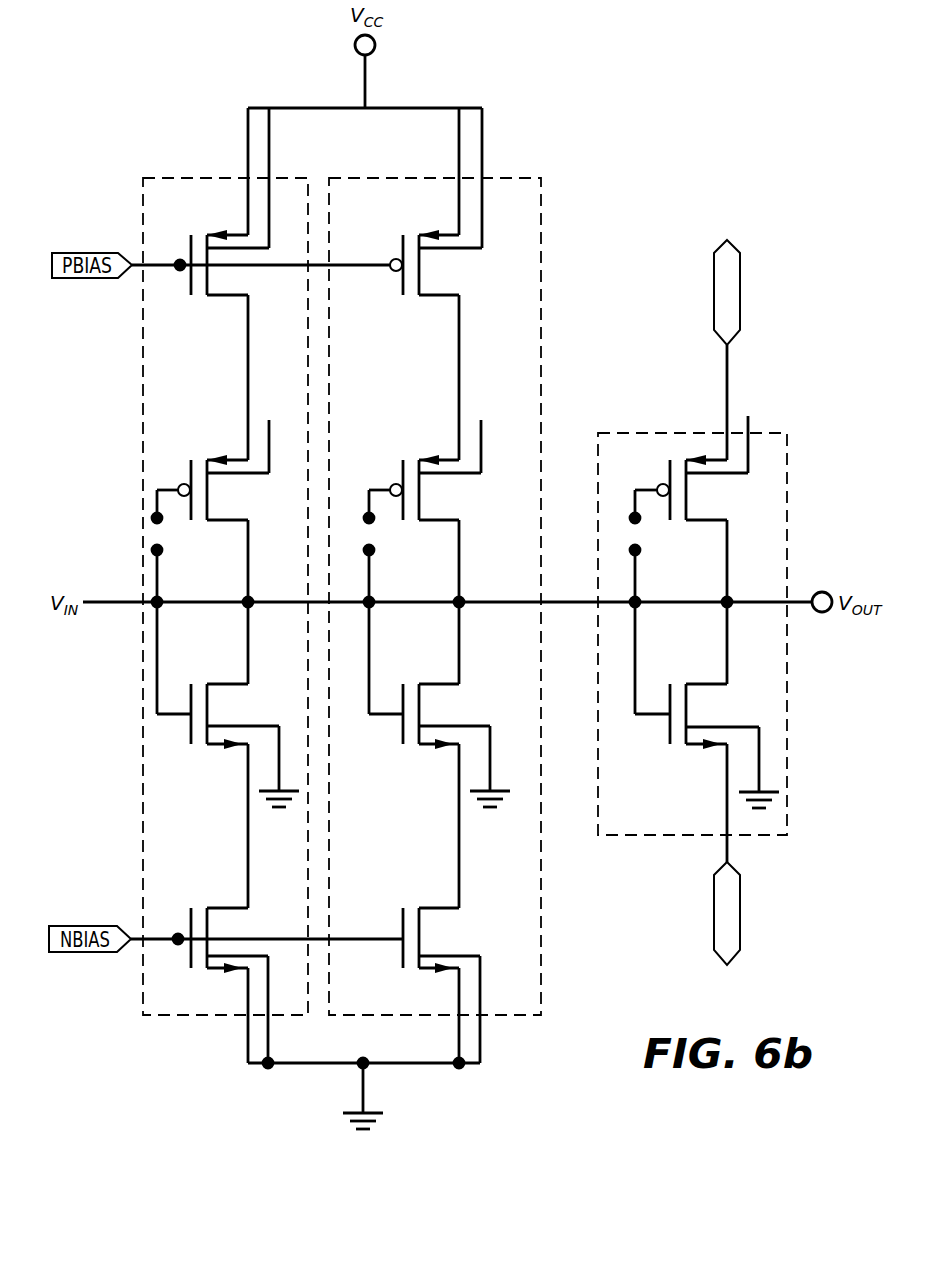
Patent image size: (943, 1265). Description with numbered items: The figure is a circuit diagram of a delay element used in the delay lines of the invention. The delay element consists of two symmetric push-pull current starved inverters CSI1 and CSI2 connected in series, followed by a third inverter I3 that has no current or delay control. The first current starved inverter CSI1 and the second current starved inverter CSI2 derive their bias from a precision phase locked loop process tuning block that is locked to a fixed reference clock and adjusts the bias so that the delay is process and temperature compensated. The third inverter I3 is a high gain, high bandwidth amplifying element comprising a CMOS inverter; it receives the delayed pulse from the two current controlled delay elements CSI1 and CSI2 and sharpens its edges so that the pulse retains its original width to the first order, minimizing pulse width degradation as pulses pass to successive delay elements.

The first current starved inverter CSI1 is at (143, 198).
The second current starved inverter CSI2 is at (541, 201).
The third inverter I3 is at (622, 433).